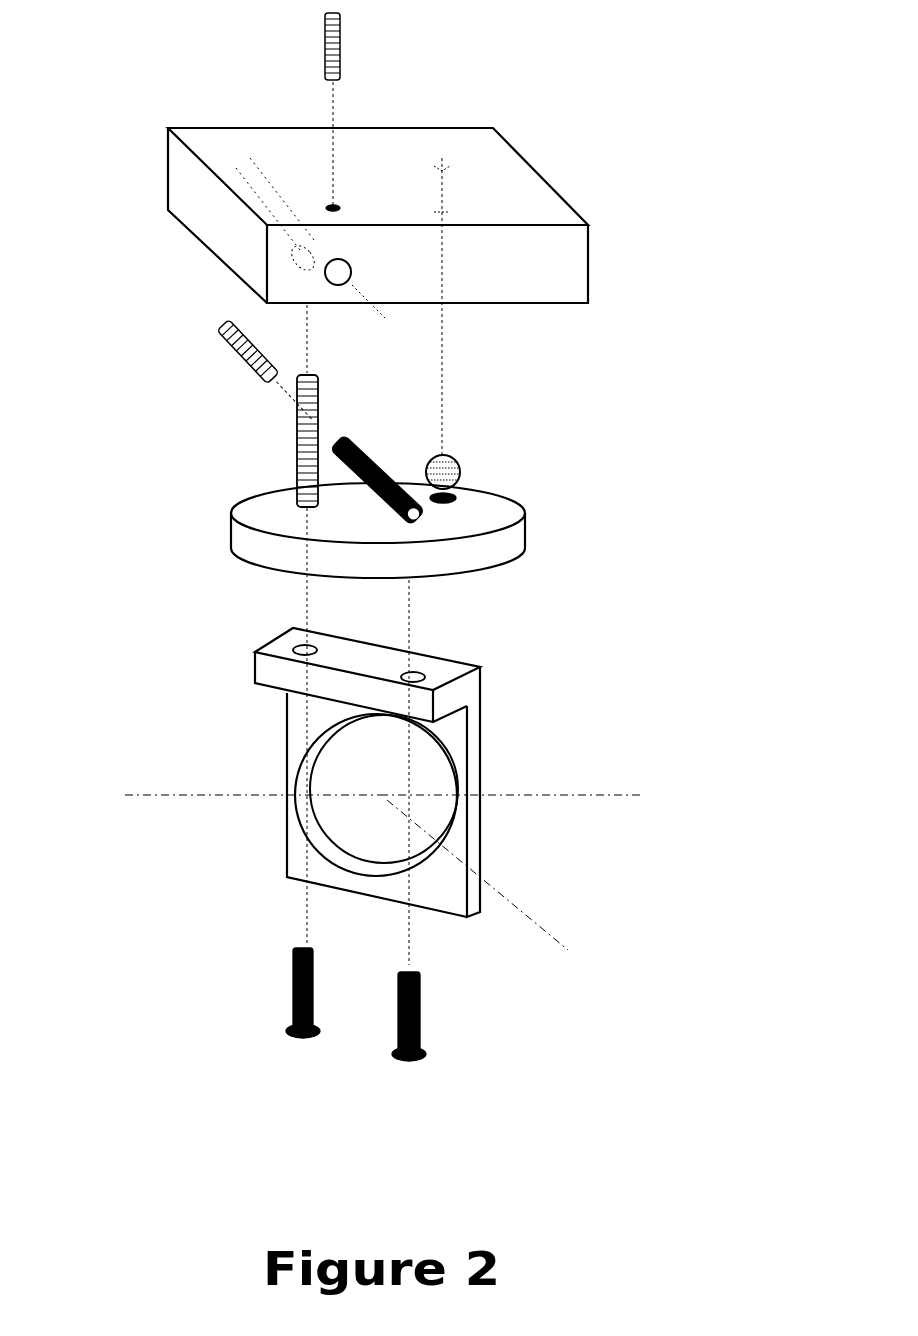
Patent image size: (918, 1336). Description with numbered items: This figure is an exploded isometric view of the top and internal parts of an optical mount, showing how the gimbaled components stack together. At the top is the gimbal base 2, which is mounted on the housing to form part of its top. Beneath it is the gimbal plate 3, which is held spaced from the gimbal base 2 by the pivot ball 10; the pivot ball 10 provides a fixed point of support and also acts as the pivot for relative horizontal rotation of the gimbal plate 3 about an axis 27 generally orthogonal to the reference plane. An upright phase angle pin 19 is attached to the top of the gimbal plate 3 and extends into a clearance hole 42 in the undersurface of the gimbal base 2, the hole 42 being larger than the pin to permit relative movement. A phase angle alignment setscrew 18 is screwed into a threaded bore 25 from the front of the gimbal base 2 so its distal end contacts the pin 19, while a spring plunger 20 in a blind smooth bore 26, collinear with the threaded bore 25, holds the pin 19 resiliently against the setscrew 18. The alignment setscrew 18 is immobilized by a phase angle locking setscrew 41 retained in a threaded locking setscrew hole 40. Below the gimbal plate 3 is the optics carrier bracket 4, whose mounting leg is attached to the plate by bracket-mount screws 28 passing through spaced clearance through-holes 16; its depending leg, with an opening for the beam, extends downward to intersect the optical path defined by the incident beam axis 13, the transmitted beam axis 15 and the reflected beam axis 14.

The gimbal base 2 is at (595, 256).
The gimbal plate 3 is at (228, 513).
The optics carrier bracket 4 is at (490, 723).
The pivot ball 10 is at (465, 465).
The axis of incoming incident beam 13 is at (124, 790).
The axis of outgoing reflected beam 14 is at (568, 946).
The axis of outgoing transmission beam 15 is at (635, 800).
The clearance through-holes 16 is at (320, 648).
The phase angle alignment setscrew 18 is at (435, 510).
The phase angle pin 19 is at (292, 512).
The spring plunger 20 is at (210, 345).
The threaded bore 25 is at (354, 274).
The blind smooth bore 26 is at (228, 168).
The axis 27 is at (452, 385).
The bracket-mount screws 28 is at (290, 1006).
The threaded locking setscrew hole 40 is at (336, 204).
The phase angle locking setscrew 41 is at (318, 42).
The clearance hole 42 is at (290, 256).